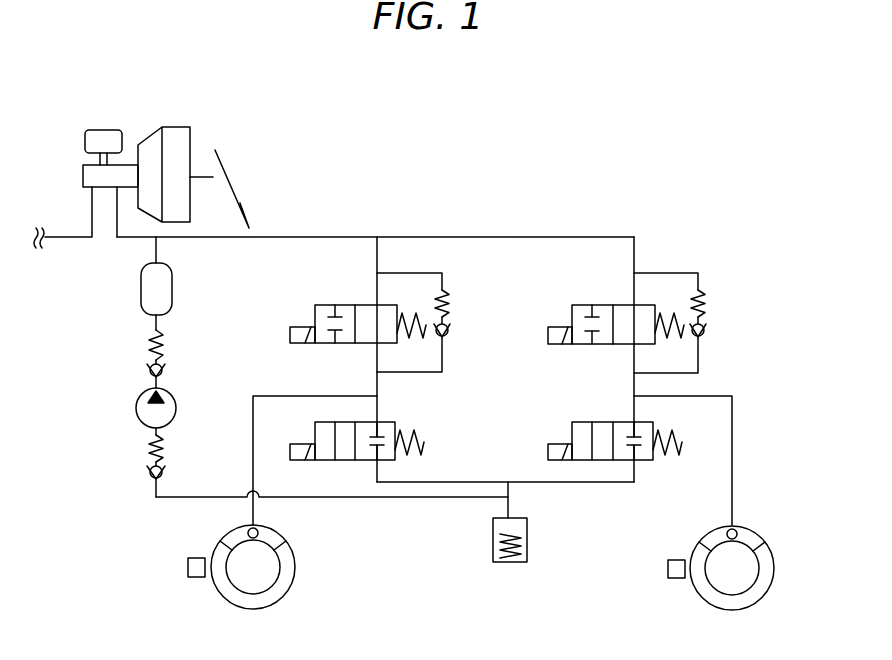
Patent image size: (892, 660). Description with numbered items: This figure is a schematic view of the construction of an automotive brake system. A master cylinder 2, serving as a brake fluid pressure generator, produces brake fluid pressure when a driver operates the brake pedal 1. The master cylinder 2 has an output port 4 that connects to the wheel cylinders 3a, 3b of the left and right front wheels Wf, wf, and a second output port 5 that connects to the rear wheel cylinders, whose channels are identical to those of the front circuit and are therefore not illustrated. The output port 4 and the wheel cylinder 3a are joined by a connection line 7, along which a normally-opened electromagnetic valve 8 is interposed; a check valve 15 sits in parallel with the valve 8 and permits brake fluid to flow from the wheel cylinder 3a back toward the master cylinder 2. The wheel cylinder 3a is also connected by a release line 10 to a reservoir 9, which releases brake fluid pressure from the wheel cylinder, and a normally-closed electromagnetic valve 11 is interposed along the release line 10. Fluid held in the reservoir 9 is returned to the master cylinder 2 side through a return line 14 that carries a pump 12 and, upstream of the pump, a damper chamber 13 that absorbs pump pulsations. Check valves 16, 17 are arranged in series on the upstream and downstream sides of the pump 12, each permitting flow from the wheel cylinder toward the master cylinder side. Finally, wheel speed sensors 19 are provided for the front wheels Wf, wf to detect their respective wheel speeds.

The brake pedal 1 is at (222, 192).
The master cylinder 2 is at (130, 165).
The wheel cylinder 3a is at (283, 532).
The wheel cylinder 3b is at (745, 527).
The output port 4 is at (121, 200).
The output port 5 is at (92, 197).
The connection line 7 is at (345, 238).
The normally-opened electromagnetic valve 8 is at (315, 308).
The reservoir 9 is at (527, 552).
The release line 10 is at (476, 482).
The normally-closed electromagnetic valve 11 is at (393, 413).
The pump 12 is at (136, 410).
The damper chamber 13 is at (141, 288).
The return line 14 is at (166, 497).
The check valve 15 is at (448, 302).
The check valve 16 is at (148, 358).
The check valve 17 is at (147, 455).
The wheel speed sensor 19 is at (188, 567).
The front wheel Wf is at (283, 588).
The front wheel wf is at (762, 594).